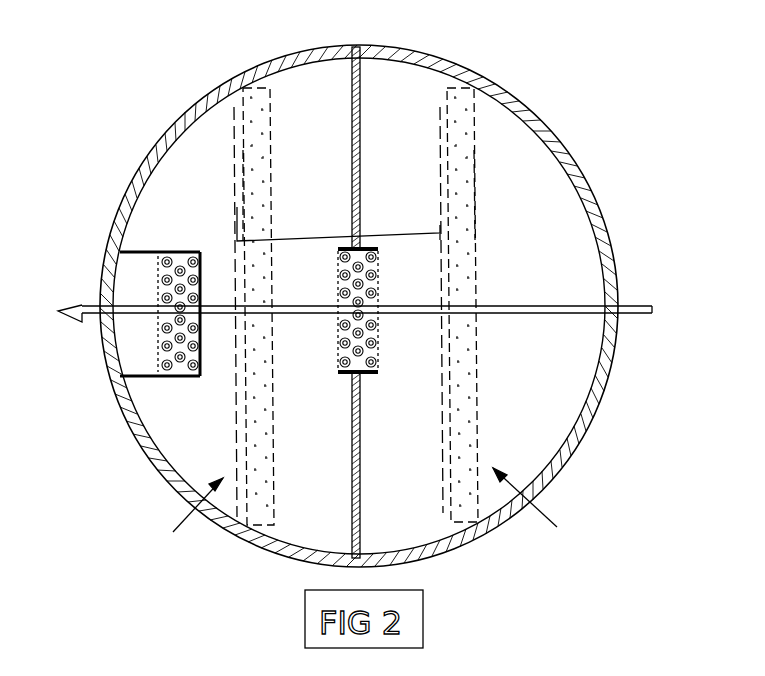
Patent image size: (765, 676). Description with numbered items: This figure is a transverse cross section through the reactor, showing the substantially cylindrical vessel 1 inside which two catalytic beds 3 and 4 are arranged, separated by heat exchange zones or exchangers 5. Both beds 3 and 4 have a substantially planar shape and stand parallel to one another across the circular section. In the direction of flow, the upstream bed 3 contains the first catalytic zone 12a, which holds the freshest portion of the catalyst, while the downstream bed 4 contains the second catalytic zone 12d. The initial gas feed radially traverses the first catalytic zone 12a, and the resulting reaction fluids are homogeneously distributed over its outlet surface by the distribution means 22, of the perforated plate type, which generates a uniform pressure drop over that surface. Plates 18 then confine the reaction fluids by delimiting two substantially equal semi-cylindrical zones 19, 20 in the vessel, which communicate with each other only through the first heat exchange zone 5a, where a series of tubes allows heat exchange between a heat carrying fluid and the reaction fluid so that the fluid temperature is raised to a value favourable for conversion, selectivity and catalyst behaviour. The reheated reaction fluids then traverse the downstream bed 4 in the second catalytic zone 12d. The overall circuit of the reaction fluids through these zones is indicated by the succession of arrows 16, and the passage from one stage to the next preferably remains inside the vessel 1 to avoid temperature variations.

The cylindrical vessel 1 is at (288, 50).
The catalytic bed 3 is at (475, 193).
The catalytic bed 4 is at (242, 182).
The heat exchanger 5 is at (148, 292).
The first heat exchange zone 5a is at (378, 293).
The first catalytic zone 12a is at (465, 420).
The second catalytic zone 12d is at (260, 410).
The arrows 16 is at (552, 314).
The plates 18 is at (360, 88).
The semi-cylindrical zone 19 is at (542, 519).
The semi-cylindrical zone 20 is at (184, 526).
The distribution means 22 is at (236, 240).